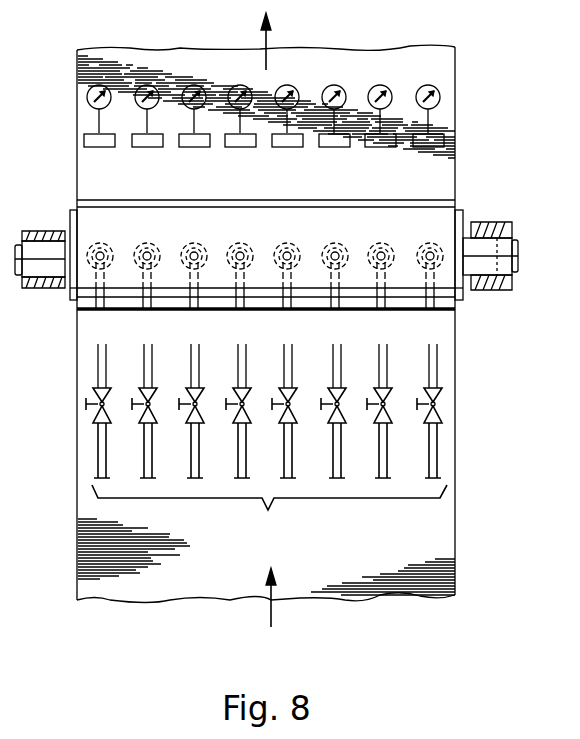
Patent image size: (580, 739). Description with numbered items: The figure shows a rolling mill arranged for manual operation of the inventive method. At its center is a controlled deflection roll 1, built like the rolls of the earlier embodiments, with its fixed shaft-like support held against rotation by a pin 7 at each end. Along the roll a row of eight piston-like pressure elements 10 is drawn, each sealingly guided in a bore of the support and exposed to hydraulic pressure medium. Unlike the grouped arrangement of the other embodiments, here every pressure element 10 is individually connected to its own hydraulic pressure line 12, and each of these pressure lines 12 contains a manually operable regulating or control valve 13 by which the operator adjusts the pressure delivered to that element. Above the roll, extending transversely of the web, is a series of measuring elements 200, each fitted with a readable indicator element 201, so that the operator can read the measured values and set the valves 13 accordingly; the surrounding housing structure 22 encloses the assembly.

The controlled deflection roll 1 is at (419, 198).
The pin 7 is at (520, 250).
The pressure elements 10 is at (175, 252).
The hydraulic pressure lines 12 is at (269, 514).
The manually operable control valve 13 is at (94, 392).
The housing 22 is at (456, 65).
The measuring elements 200 is at (84, 141).
The readable indicator element 201 is at (87, 96).